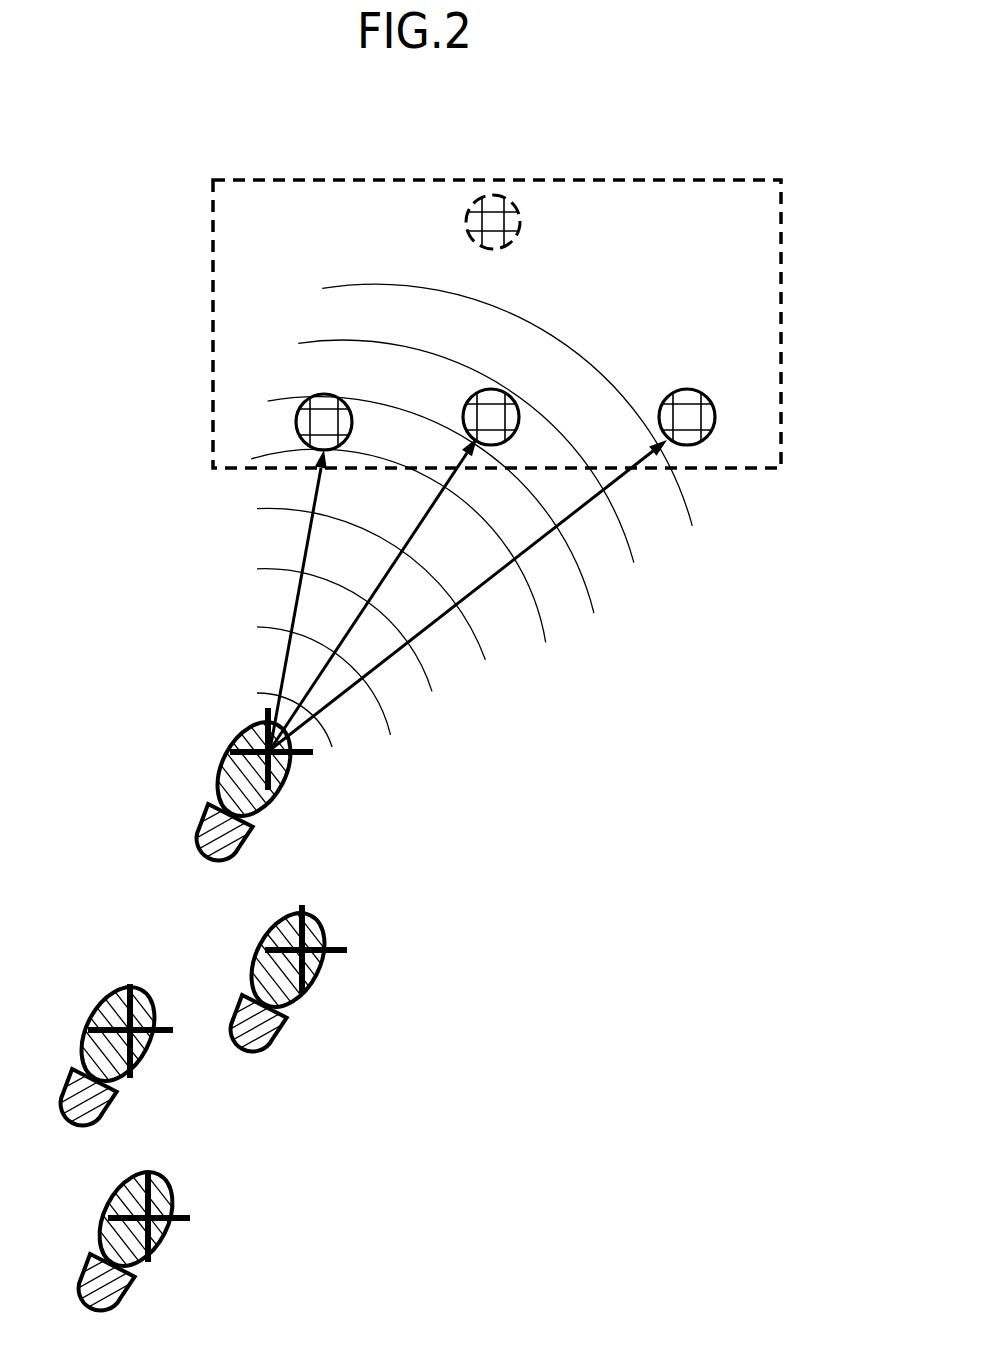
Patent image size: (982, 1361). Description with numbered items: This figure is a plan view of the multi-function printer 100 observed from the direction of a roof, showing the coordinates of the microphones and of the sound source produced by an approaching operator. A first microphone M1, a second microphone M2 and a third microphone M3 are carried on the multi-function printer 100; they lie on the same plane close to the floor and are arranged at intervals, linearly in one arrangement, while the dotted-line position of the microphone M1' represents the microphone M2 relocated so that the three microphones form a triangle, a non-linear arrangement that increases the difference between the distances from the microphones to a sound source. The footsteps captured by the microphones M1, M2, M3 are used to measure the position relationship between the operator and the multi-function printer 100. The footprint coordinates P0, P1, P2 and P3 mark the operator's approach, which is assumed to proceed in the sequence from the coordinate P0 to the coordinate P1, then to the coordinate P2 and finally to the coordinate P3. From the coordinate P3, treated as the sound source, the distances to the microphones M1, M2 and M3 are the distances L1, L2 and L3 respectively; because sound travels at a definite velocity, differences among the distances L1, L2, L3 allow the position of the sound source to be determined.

The multi-function printer 100 is at (532, 291).
The microphone position in triangular arrangement M1' is at (493, 181).
The first microphone M1 is at (317, 375).
The second microphone M2 is at (493, 391).
The third microphone M3 is at (687, 396).
The distance to first microphone L1 is at (296, 600).
The distance to second microphone L2 is at (373, 591).
The distance to third microphone L3 is at (468, 593).
The footprint coordinate P0 is at (129, 1228).
The footprint coordinate P1 is at (120, 1053).
The footprint coordinate P2 is at (278, 979).
The footprint coordinate P3 is at (244, 788).